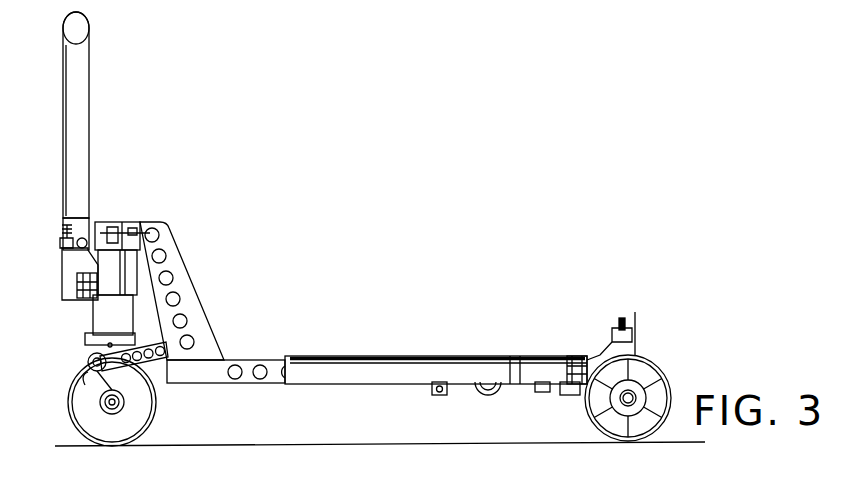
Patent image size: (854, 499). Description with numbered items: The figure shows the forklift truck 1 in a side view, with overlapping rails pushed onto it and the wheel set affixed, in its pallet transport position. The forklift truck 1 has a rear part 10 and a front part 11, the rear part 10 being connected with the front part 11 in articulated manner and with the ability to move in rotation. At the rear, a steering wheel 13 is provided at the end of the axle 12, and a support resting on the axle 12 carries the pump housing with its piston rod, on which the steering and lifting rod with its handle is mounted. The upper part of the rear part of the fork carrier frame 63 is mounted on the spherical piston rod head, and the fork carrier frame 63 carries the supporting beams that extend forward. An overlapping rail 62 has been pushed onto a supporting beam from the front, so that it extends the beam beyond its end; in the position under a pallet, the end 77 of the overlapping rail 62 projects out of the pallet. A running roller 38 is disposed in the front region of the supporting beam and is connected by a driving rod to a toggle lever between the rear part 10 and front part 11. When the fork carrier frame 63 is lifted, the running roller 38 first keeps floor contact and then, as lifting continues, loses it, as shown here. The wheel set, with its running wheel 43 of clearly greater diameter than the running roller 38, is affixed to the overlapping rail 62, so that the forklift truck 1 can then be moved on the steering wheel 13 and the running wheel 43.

The forklift truck 1 is at (314, 136).
The rear part 10 is at (111, 107).
The front part 11 is at (386, 328).
The axle 12 is at (105, 400).
The steering wheel 13 is at (151, 407).
The running roller 38 is at (498, 385).
The running wheel 43 is at (648, 352).
The overlapping rail 62 is at (450, 357).
The fork carrier frame 63 is at (220, 373).
The end of overlapping rail 77 is at (567, 357).